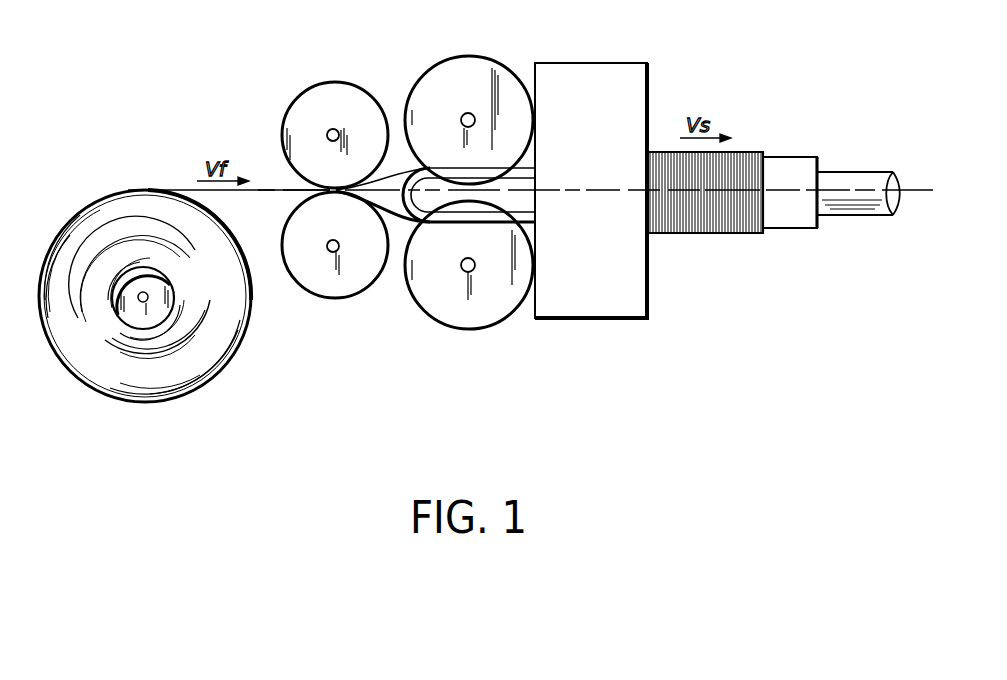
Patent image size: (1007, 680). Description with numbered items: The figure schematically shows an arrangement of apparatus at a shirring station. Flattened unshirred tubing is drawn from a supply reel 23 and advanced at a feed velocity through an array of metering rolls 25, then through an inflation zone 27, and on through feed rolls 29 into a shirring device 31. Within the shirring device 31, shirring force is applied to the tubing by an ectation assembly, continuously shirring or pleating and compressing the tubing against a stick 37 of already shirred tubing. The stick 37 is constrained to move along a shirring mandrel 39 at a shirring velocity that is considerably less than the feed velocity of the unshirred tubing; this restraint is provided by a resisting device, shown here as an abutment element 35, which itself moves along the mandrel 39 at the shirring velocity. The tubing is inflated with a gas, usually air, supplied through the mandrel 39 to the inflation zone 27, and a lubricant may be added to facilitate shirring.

The supply reel 23 is at (163, 383).
The metering rolls 25 is at (350, 100).
The inflation zone 27 is at (401, 177).
The feed rolls 29 is at (507, 83).
The shirring device 31 is at (613, 80).
The abutment element 35 is at (794, 166).
The stick of shirred tubing 37 is at (742, 160).
The shirring mandrel 39 is at (858, 203).